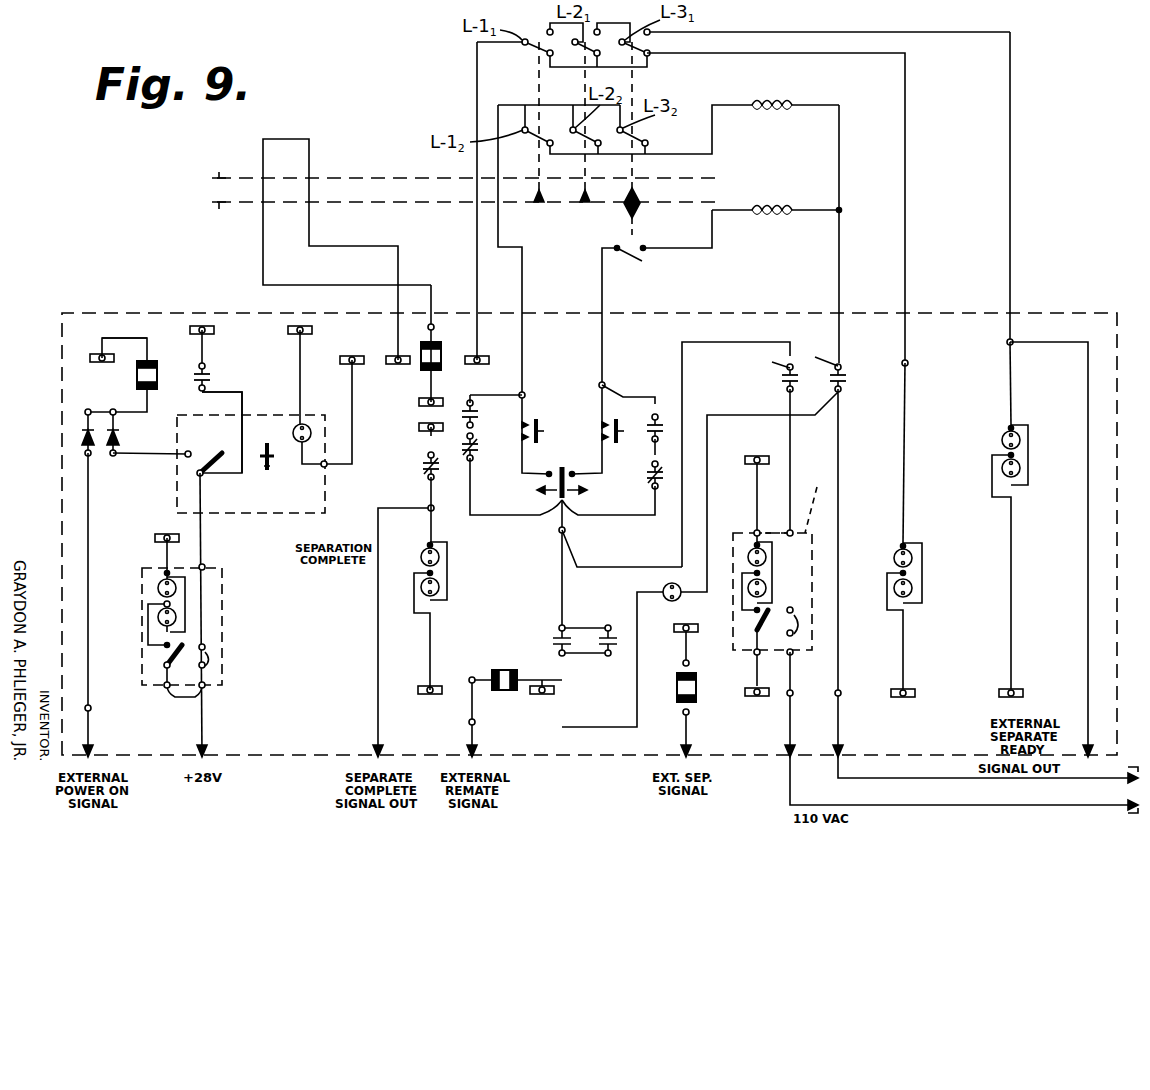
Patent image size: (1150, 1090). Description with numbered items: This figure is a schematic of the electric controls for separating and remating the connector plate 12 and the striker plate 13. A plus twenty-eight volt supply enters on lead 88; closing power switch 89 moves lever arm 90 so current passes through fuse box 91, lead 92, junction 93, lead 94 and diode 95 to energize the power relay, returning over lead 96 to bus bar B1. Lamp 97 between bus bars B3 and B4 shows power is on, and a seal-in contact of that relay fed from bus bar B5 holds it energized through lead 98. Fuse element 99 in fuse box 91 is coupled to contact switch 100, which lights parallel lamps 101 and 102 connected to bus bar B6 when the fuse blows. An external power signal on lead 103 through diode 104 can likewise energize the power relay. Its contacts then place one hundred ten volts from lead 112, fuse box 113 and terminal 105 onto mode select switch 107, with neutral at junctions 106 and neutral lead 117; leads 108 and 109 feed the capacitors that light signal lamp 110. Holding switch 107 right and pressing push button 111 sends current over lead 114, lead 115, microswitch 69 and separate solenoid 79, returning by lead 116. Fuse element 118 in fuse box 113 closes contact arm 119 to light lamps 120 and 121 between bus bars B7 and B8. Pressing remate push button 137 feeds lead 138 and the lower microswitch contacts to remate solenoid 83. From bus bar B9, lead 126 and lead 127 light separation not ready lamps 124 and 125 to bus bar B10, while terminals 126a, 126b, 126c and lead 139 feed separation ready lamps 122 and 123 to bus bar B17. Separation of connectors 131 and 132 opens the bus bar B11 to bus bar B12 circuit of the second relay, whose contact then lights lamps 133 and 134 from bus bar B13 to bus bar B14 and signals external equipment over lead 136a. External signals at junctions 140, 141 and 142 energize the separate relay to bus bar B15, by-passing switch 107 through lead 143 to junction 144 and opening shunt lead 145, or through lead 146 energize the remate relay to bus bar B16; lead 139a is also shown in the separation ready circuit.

The connector plate 12 is at (222, 172).
The striker plate 13 is at (222, 210).
The microswitch 69 is at (640, 260).
The separate solenoid 79 is at (797, 215).
The remate solenoid 83 is at (793, 110).
The lead 88 is at (206, 735).
The power switch 89 is at (270, 470).
The lever arm 90 is at (208, 470).
The fuse box 91 is at (224, 633).
The lead 92 is at (205, 553).
The junction 93 is at (189, 451).
The lead 94 is at (152, 455).
The diode 95 is at (118, 428).
The lead 96 is at (122, 338).
The lamp 97 is at (305, 425).
The lead 98 is at (252, 430).
The fuse element 99 is at (207, 665).
The contact switch 100 is at (168, 656).
The lamp 101 is at (158, 615).
The lamp 102 is at (158, 583).
The lead 103 is at (86, 625).
The diode 104 is at (80, 434).
The terminal 105 is at (566, 518).
The junction 106 is at (841, 212).
The mode select switch 107 is at (562, 465).
The lead 108 is at (590, 568).
The lead 109 is at (640, 625).
The signal lamp 110 is at (663, 588).
The separate push button 111 is at (620, 430).
The lead 112 is at (792, 722).
The fuse box 113 is at (818, 504).
The lead 114 is at (575, 480).
The lead 115 is at (604, 306).
The lead 116 is at (841, 336).
The neutral lead 117 is at (970, 783).
The fuse element 118 is at (798, 650).
The contact arm 119 is at (752, 626).
The lamp 120 is at (748, 553).
The lamp 121 is at (748, 590).
The fuse light 122 is at (1014, 428).
The fuse light 123 is at (1020, 467).
The fuse light 124 is at (905, 546).
The fuse light 125 is at (912, 588).
The lead 126 is at (475, 238).
The upper terminal 126a is at (553, 31).
The upper terminal 126b is at (598, 31).
The upper terminal 126c is at (650, 31).
The lead 127 is at (850, 55).
The connector 131 is at (258, 185).
The connector 132 is at (263, 203).
The lamp 133 is at (440, 557).
The lamp 134 is at (440, 587).
The lead 136a is at (378, 548).
The remate push button 137 is at (530, 412).
The lead 138 is at (524, 280).
The lead 139 is at (1090, 360).
The lead 139a is at (1012, 128).
The junction 140 is at (96, 750).
The junction 141 is at (478, 750).
The junction 142 is at (680, 750).
The lead 143 is at (622, 512).
The junction 144 is at (605, 384).
The lead 145 is at (445, 490).
The lead 146 is at (474, 706).
The bus bar B1 is at (92, 357).
The bus bar B3 is at (312, 331).
The bus bar B4 is at (365, 358).
The bus bar B5 is at (212, 333).
The bus bar B6 is at (155, 537).
The bus bar B7 is at (748, 460).
The bus bar B8 is at (750, 697).
The bus bar B9 is at (484, 360).
The bus bar B10 is at (916, 695).
The bus bar B11 is at (412, 421).
The bus bar B12 is at (401, 392).
The bus bar B13 is at (422, 440).
The bus bar B14 is at (418, 693).
The bus bar B15 is at (690, 633).
The bus bar B16 is at (550, 692).
The bus bar B17 is at (1022, 696).